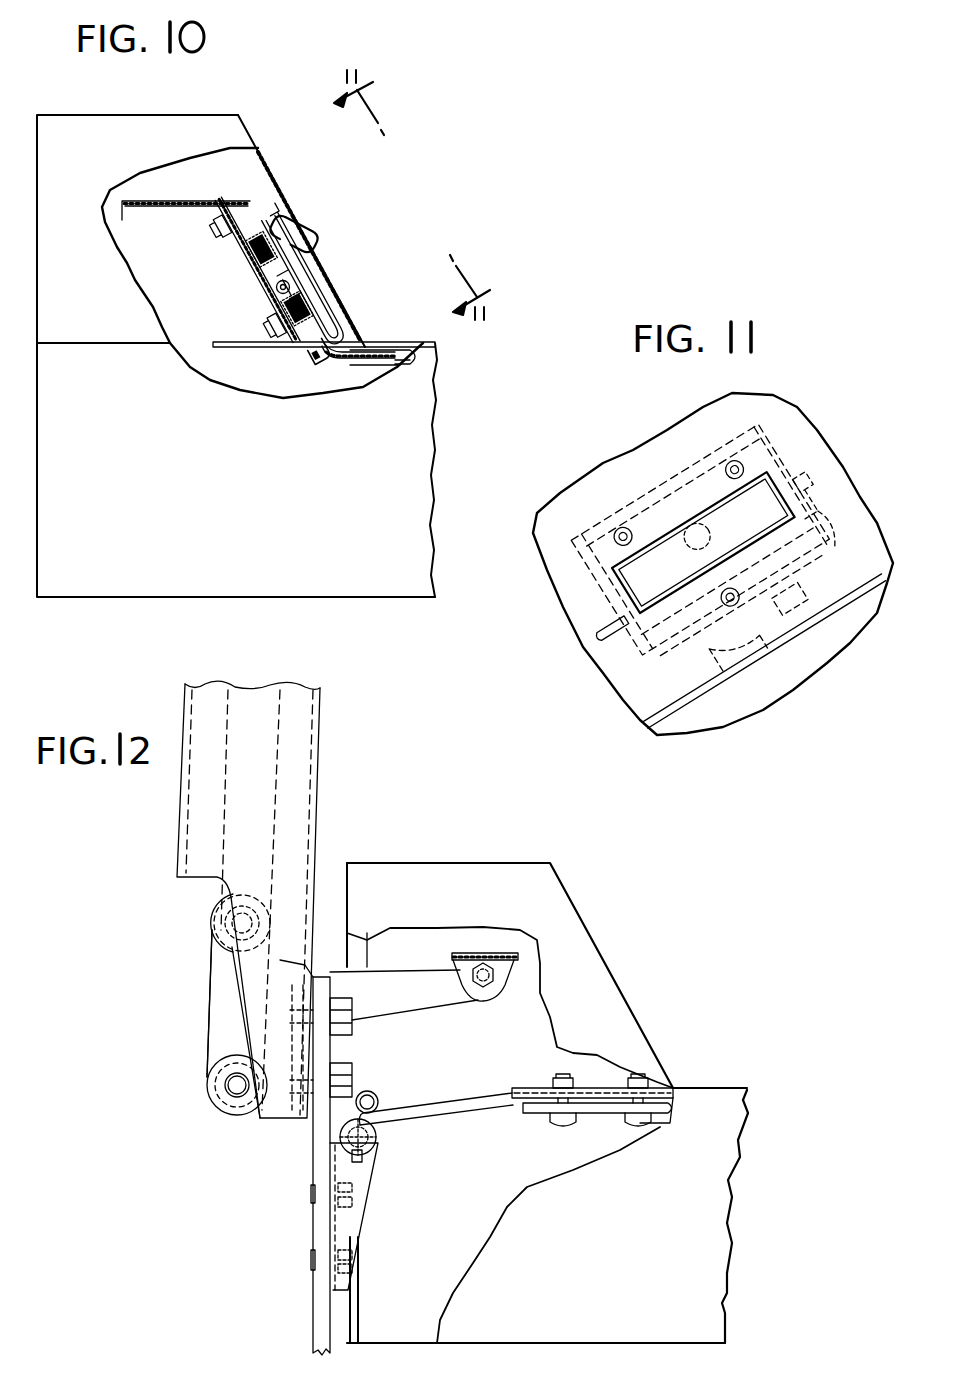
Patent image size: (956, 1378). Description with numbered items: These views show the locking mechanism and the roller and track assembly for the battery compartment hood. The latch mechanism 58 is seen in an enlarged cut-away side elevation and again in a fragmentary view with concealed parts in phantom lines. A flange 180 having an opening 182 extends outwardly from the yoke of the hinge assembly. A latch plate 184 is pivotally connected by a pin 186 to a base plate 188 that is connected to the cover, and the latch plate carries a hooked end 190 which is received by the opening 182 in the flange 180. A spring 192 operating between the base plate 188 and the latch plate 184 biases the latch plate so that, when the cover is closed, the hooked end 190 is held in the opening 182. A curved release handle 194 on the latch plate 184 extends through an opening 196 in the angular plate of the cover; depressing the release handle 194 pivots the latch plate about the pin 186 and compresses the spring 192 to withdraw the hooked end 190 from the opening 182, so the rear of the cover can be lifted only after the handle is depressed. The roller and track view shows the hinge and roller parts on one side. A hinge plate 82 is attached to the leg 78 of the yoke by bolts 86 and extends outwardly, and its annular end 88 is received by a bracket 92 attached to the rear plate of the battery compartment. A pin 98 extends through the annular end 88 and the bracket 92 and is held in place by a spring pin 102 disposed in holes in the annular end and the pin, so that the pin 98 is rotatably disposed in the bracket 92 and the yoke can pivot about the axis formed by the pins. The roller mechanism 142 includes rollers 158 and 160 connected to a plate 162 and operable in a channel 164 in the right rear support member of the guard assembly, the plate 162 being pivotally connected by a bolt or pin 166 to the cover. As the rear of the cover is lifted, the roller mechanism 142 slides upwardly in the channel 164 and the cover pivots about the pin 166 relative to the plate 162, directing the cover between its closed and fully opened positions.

In FIG. 10, the latch mechanism 58 is at (325, 222).
In FIG. 11, the latch mechanism 58 is at (563, 625).
In FIG. 12, the leg 78 is at (612, 1112).
In FIG. 12, the hinge plate 82 is at (458, 1108).
In FIG. 12, the bolts 86 is at (562, 1125).
In FIG. 12, the annular end 88 is at (380, 1148).
In FIG. 12, the bracket 92 is at (365, 1180).
In FIG. 12, the pin 98 is at (376, 1138).
In FIG. 12, the spring pin 102 is at (375, 1100).
In FIG. 12, the roller mechanism 142 is at (200, 1098).
In FIG. 12, the roller 158 is at (215, 912).
In FIG. 12, the roller 160 is at (205, 1068).
In FIG. 12, the plate 162 is at (215, 990).
In FIG. 12, the channel 164 is at (250, 692).
In FIG. 12, the bolt or pin 166 is at (490, 965).
In FIG. 10, the flange 180 is at (298, 335).
In FIG. 11, the flange 180 is at (850, 565).
In FIG. 11, the opening 182 is at (745, 700).
In FIG. 10, the latch plate 184 is at (305, 268).
In FIG. 10, the pin 186 is at (313, 292).
In FIG. 11, the pin 186 is at (850, 472).
In FIG. 10, the base plate 188 is at (265, 295).
In FIG. 10, the hooked end 190 is at (320, 345).
In FIG. 10, the spring 192 is at (250, 255).
In FIG. 10, the curved release handle 194 is at (306, 218).
In FIG. 10, the opening 196 is at (287, 208).